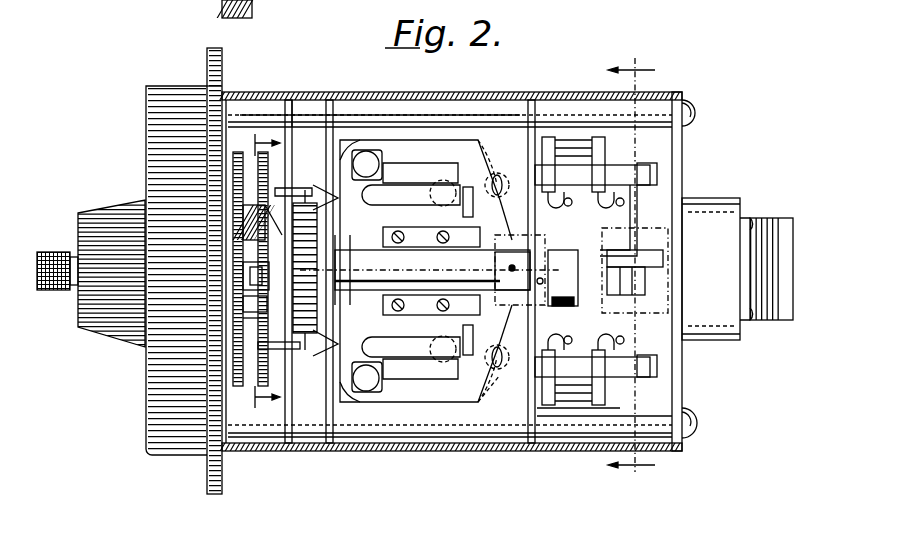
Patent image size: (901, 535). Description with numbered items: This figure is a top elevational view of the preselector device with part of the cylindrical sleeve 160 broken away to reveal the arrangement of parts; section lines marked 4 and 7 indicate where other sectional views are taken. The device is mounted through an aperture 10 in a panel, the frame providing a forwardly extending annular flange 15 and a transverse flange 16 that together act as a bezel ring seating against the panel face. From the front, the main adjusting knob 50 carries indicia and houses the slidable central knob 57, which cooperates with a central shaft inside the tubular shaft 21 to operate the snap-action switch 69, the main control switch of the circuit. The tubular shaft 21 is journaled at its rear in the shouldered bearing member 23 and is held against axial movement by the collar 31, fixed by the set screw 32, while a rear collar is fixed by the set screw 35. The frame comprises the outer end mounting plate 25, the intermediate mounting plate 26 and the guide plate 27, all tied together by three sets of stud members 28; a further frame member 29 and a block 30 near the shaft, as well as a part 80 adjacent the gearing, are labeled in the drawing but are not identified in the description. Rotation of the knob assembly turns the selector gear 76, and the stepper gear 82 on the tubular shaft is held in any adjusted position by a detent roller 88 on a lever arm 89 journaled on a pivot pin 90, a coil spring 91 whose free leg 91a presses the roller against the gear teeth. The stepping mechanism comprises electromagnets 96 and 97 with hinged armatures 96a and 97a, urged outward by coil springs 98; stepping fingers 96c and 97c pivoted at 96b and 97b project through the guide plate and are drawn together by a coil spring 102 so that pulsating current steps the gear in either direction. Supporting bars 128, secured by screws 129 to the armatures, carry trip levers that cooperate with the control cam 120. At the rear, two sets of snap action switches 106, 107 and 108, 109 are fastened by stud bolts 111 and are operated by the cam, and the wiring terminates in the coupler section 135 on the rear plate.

The aperture 10 is at (180, 100).
The annular flange 15 is at (147, 104).
The transverse flange 16 is at (207, 52).
The tubular shaft 21 is at (352, 260).
The shouldered bearing member 23 is at (518, 267).
The outer end mounting plate 25 is at (682, 376).
The intermediate mounting plate 26 is at (332, 118).
The guide plate 27 is at (288, 100).
The stud members 28 is at (489, 108).
The post 29 is at (535, 108).
The contact block 30 is at (563, 280).
The collar 31 is at (499, 198).
The set screw 32 is at (494, 310).
The set screw 35 is at (543, 281).
The main adjusting knob 50 is at (90, 305).
The central knob 57 is at (52, 252).
The snap-action switch 69 is at (668, 270).
The selector gear 76 is at (258, 346).
The gear 80 is at (243, 262).
The stepper gear 82 is at (262, 320).
The roller 88 is at (243, 306).
The lever arm 89 is at (286, 188).
The pivot pin 90 is at (243, 215).
The coil spring 91 is at (237, 171).
The free leg 91a is at (278, 242).
The electromagnet 96 is at (425, 405).
The armature 96a is at (370, 398).
The pivotal mounting 96b is at (476, 386).
The stepping finger 96c is at (340, 374).
The electromagnet 97 is at (413, 135).
The armature 97a is at (356, 145).
The pivotal mounting 97b is at (481, 163).
The stepping finger 97c is at (338, 194).
The coil springs 98 is at (497, 180).
The coil spring 102 is at (320, 350).
The snap action switch 106 is at (562, 178).
The snap action switch 107 is at (610, 184).
The snap action switch 108 is at (536, 410).
The snap action switch 109 is at (612, 375).
The stud bolts 111 is at (648, 170).
The control cam 120 is at (605, 238).
The supporting bars 128 is at (495, 270).
The screws 129 is at (440, 296).
The coupler section 135 is at (718, 198).
The cylindrical sleeve 160 is at (303, 100).
The section line 4 is at (255, 271).
The section line 7 is at (641, 268).